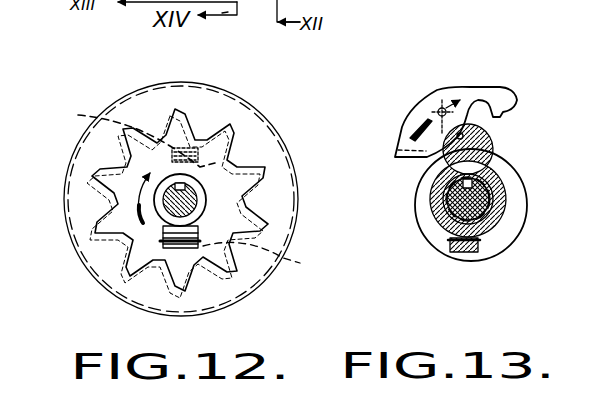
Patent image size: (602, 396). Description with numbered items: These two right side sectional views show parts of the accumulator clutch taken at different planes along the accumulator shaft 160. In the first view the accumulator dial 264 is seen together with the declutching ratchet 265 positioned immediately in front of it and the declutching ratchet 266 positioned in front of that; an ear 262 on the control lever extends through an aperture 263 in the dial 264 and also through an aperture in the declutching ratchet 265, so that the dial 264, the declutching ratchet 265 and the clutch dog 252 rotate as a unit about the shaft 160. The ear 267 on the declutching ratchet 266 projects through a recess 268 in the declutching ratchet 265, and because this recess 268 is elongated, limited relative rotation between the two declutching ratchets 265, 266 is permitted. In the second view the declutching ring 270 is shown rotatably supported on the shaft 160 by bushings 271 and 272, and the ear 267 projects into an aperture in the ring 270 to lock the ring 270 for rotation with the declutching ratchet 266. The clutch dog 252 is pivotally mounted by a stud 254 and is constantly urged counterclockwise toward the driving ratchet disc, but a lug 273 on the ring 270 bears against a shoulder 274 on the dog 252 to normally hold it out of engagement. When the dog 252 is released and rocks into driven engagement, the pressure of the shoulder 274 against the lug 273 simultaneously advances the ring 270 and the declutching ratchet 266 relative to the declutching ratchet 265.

In FIG. 12, the accumulator shaft 160 is at (197, 200).
In FIG. 13, the accumulator shaft 160 is at (475, 199).
In FIG. 13, the clutch dog 252 is at (467, 88).
In FIG. 13, the stud 254 is at (442, 108).
In FIG. 12, the ear 262 is at (125, 133).
In FIG. 12, the aperture 263 is at (215, 163).
In FIG. 12, the accumulator dial 264 is at (287, 151).
In FIG. 12, the declutching ratchet 265 is at (128, 249).
In FIG. 12, the declutching ratchet 266 is at (157, 243).
In FIG. 12, the ear 267 is at (210, 247).
In FIG. 13, the ear 267 is at (467, 250).
In FIG. 12, the recess 268 is at (300, 263).
In FIG. 13, the declutching ring 270 is at (578, 272).
In FIG. 13, the bushing 271 is at (497, 180).
In FIG. 13, the bushing 272 is at (492, 208).
In FIG. 13, the lug 273 is at (463, 134).
In FIG. 13, the shoulder 274 is at (403, 136).